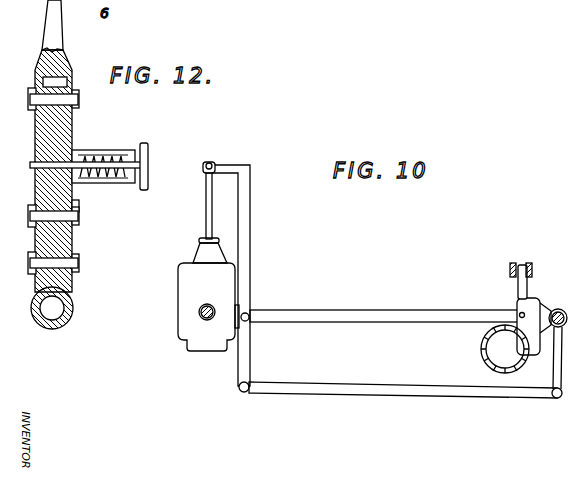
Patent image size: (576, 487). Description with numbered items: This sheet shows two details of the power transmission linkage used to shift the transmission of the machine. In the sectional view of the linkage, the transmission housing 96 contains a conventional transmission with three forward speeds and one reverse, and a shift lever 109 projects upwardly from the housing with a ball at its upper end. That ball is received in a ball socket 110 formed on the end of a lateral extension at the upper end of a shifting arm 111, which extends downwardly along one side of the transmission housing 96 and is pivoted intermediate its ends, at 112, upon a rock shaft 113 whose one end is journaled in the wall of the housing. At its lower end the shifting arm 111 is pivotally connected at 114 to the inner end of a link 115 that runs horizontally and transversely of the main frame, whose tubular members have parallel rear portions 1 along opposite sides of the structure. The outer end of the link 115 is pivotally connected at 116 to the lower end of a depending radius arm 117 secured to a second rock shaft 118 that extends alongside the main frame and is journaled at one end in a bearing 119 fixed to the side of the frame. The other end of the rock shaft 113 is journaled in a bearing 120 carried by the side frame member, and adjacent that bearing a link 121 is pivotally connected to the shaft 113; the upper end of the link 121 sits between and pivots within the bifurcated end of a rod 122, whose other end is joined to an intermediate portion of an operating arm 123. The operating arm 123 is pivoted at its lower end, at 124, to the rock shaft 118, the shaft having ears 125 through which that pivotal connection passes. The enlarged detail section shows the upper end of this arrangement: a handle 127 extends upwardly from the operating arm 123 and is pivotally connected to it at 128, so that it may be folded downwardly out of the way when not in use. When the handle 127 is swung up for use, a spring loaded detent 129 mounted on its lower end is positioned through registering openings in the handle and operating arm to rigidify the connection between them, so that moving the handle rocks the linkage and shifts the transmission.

In FIG. 10, the rear portions 1 is at (478, 350).
In FIG. 10, the transmission housing 96 is at (180, 285).
In FIG. 10, the shift lever 109 is at (206, 214).
In FIG. 10, the ball socket 110 is at (207, 162).
In FIG. 10, the shifting arm 111 is at (251, 229).
In FIG. 10, the pivot 112 is at (250, 313).
In FIG. 10, the rock shaft 113 is at (344, 312).
In FIG. 10, the pivotal connection 114 is at (238, 389).
In FIG. 10, the link 115 is at (298, 395).
In FIG. 10, the pivotal connection 116 is at (554, 400).
In FIG. 10, the radius arm 117 is at (555, 373).
In FIG. 12, the rock shaft 118 is at (70, 300).
In FIG. 10, the bearing 119 is at (558, 308).
In FIG. 10, the bearing 120 is at (533, 300).
In FIG. 10, the link 121 is at (522, 287).
In FIG. 12, the rod 122 is at (66, 203).
In FIG. 10, the rod 122 is at (528, 265).
In FIG. 12, the operating arm 123 is at (66, 238).
In FIG. 12, the pivotal connection 124 is at (80, 262).
In FIG. 12, the ears 125 is at (46, 250).
In FIG. 12, the handle 127 is at (58, 40).
In FIG. 12, the pivotal connection 128 is at (80, 100).
In FIG. 12, the spring loaded detent 129 is at (145, 146).